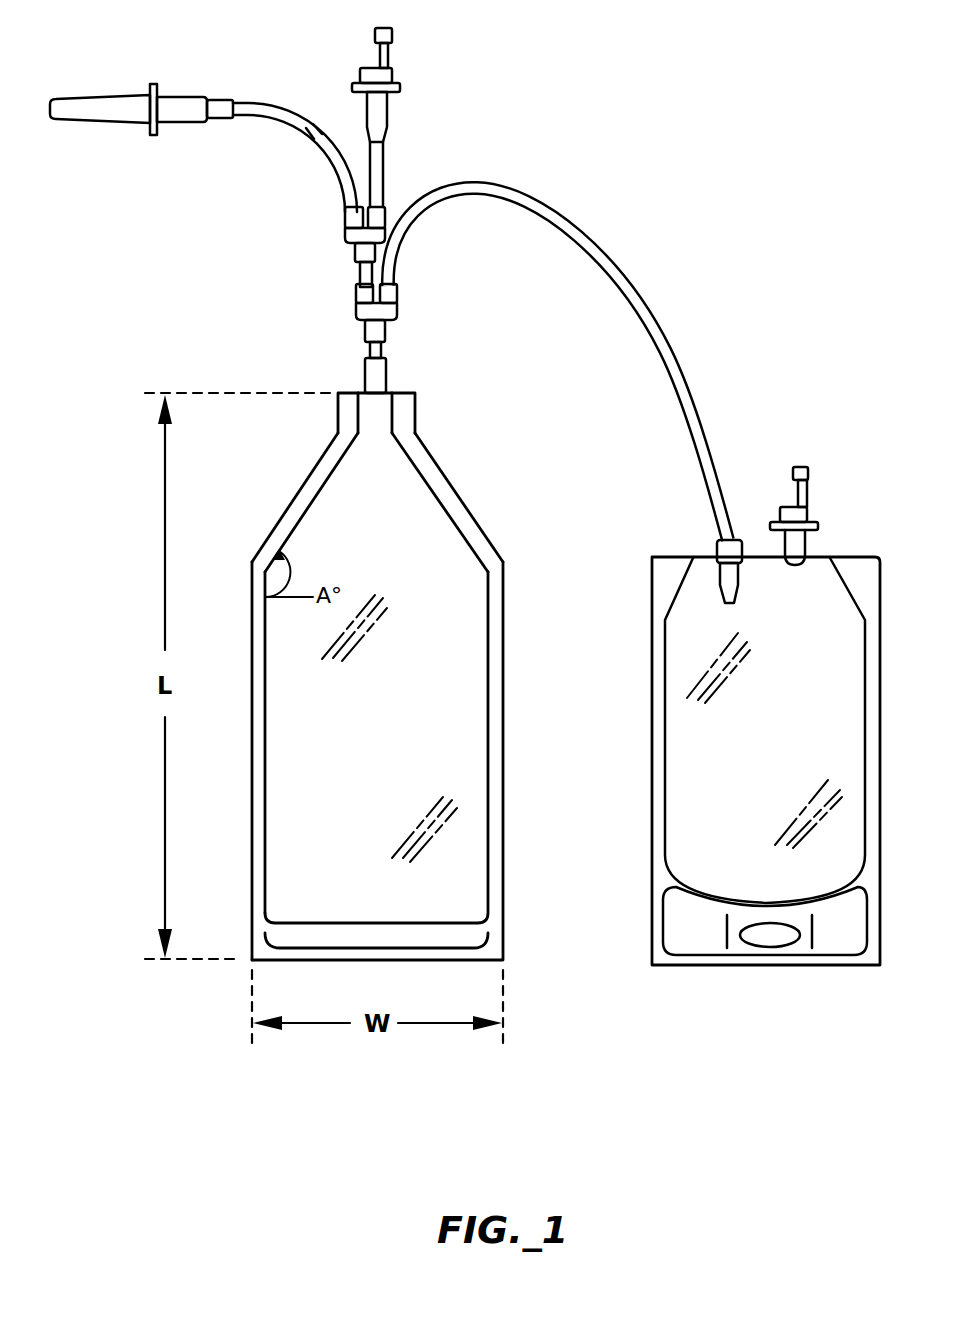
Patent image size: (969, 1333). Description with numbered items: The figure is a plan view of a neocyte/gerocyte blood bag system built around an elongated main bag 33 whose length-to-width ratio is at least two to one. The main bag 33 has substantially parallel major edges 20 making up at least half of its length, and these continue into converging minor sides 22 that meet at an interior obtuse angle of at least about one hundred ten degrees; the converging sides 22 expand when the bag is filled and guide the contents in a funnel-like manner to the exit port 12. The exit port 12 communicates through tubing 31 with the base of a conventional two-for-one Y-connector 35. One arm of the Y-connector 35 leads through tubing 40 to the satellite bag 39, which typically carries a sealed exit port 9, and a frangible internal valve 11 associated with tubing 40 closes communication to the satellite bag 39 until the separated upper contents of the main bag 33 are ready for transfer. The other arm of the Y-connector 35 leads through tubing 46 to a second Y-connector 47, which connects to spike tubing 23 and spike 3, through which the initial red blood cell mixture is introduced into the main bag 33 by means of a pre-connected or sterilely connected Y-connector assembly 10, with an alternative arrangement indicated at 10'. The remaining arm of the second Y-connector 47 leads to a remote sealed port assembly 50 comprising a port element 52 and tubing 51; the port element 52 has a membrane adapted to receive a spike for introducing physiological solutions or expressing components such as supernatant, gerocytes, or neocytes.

The spike 3 is at (195, 123).
The alternative tubing assembly 10' is at (198, 199).
The spike tubing 23 is at (330, 158).
The second Y-connector 47 is at (345, 221).
The tubing 46 is at (358, 273).
The remote sealed port assembly 50 is at (478, 107).
The port element 52 is at (378, 100).
The tubing 51 is at (378, 157).
The tubing 40 is at (573, 233).
The Y-connector 35 is at (392, 312).
The tubing 31 is at (381, 348).
The exit port 12 is at (415, 408).
The converging minor sides 22 is at (325, 477).
The main bag 33 is at (238, 628).
The major edges 20 is at (265, 763).
The Y-connector assembly 10 is at (236, 352).
The satellite bag 39 is at (640, 630).
The sealed exit port 9 is at (805, 518).
The frangible internal valve 11 is at (732, 578).